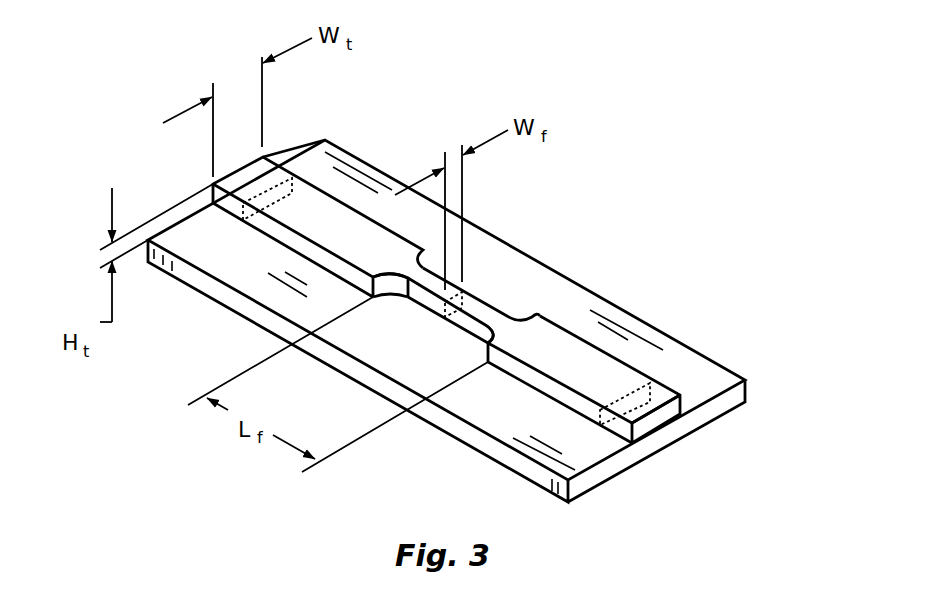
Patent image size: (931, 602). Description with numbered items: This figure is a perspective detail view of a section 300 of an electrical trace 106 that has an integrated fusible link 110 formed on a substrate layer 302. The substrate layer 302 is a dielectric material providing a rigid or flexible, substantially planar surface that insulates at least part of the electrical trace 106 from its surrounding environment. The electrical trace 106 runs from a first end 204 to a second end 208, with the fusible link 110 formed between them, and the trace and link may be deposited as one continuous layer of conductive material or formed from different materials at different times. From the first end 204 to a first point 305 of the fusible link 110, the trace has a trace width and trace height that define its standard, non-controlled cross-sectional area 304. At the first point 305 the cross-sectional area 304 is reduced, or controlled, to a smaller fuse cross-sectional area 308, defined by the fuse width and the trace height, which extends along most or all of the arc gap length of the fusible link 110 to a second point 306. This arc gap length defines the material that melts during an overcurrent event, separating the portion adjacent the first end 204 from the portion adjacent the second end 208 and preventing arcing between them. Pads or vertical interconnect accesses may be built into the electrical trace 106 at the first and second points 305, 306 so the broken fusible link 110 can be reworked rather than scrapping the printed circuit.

The section 300 is at (657, 105).
The substrate layer 302 is at (715, 410).
The cross-sectional area 304 is at (300, 182).
The first end 204 is at (272, 152).
The second end 208 is at (690, 395).
The fusible link 110 is at (475, 281).
The fuse cross-sectional area 308 is at (469, 300).
The first point 305 is at (361, 297).
The second point 306 is at (482, 368).
The electrical trace 106 is at (660, 418).